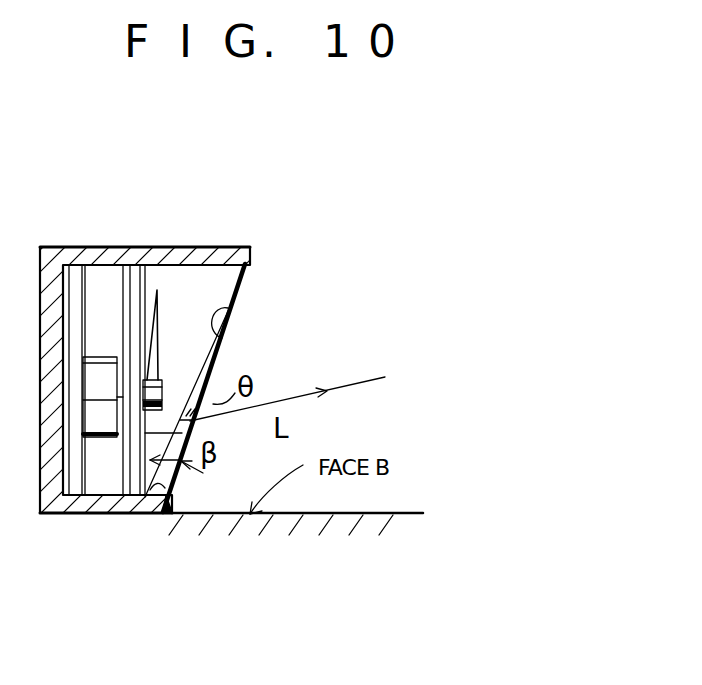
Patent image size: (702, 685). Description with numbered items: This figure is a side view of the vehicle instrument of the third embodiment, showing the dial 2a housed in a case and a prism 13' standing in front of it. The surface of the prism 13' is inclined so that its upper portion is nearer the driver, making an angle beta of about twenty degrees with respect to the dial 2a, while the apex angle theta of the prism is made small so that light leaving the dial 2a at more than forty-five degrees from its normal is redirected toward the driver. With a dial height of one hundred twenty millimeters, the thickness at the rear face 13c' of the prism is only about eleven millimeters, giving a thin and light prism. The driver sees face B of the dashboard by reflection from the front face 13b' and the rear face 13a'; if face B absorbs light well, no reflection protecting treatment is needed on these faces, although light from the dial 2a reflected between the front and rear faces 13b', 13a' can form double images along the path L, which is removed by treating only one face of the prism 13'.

The dial 2a is at (172, 258).
The prism 13' is at (261, 359).
The rear face of the prism 13a' is at (279, 307).
The front face of the prism 13b' is at (253, 398).
The rear face of the prism (thickness portion) 13c' is at (138, 551).